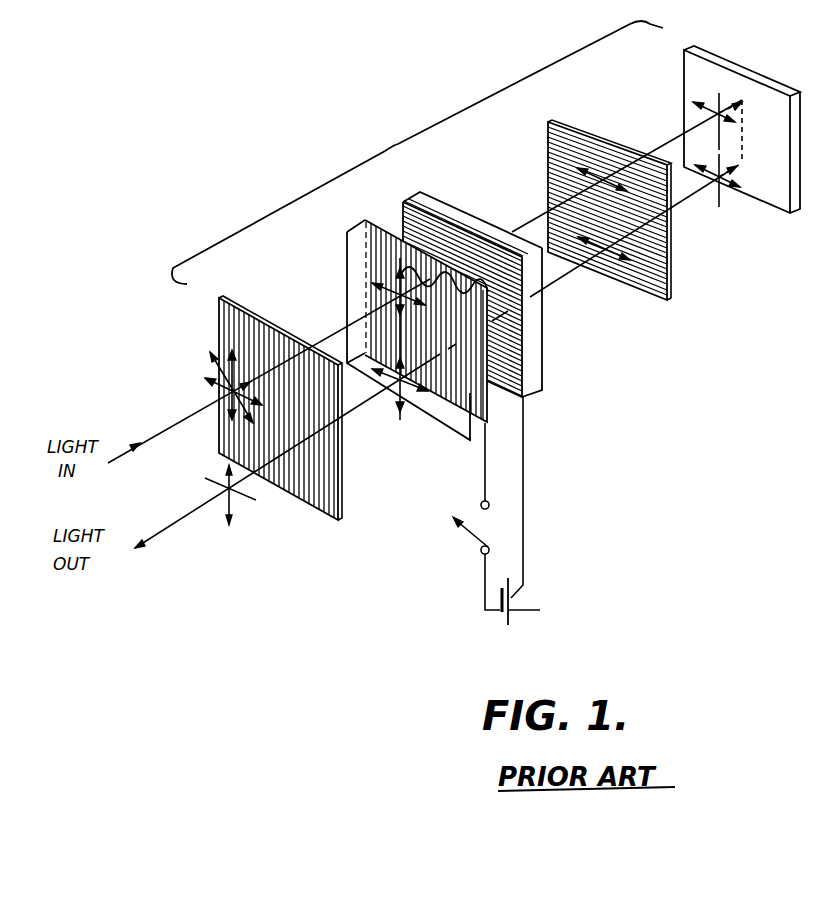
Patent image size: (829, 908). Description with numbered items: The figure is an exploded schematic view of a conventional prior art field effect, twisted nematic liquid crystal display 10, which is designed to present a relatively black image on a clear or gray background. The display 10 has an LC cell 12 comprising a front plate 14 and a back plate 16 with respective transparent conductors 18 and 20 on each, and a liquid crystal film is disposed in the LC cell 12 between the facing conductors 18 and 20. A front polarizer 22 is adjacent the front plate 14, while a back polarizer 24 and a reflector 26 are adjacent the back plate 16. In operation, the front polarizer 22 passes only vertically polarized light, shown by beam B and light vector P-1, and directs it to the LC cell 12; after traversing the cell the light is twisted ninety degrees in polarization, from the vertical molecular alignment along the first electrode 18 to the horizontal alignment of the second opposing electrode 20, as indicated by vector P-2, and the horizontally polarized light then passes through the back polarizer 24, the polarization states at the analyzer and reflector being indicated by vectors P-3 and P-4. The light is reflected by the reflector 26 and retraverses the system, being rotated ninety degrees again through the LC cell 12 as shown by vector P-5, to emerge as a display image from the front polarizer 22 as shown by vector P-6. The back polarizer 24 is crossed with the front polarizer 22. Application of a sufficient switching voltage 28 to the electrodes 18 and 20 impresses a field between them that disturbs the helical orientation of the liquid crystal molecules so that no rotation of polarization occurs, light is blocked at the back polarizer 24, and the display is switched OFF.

The liquid crystal display 10 is at (388, 150).
The LC cell 12 is at (392, 205).
The front plate 14 is at (470, 440).
The back plate 16 is at (542, 390).
The transparent conductor 18 is at (488, 420).
The transparent conductor 20 is at (522, 397).
The front polarizer 22 is at (338, 520).
The back polarizer 24 is at (668, 300).
The reflector 26 is at (800, 212).
The switching voltage 28 is at (511, 514).
The beam B is at (183, 412).
The light vector P-1 is at (398, 283).
The vector P-2 is at (603, 190).
The polarization state P-3 is at (723, 185).
The polarization state P-4 is at (620, 258).
The vector P-5 is at (397, 398).
The vector P-6 is at (233, 507).